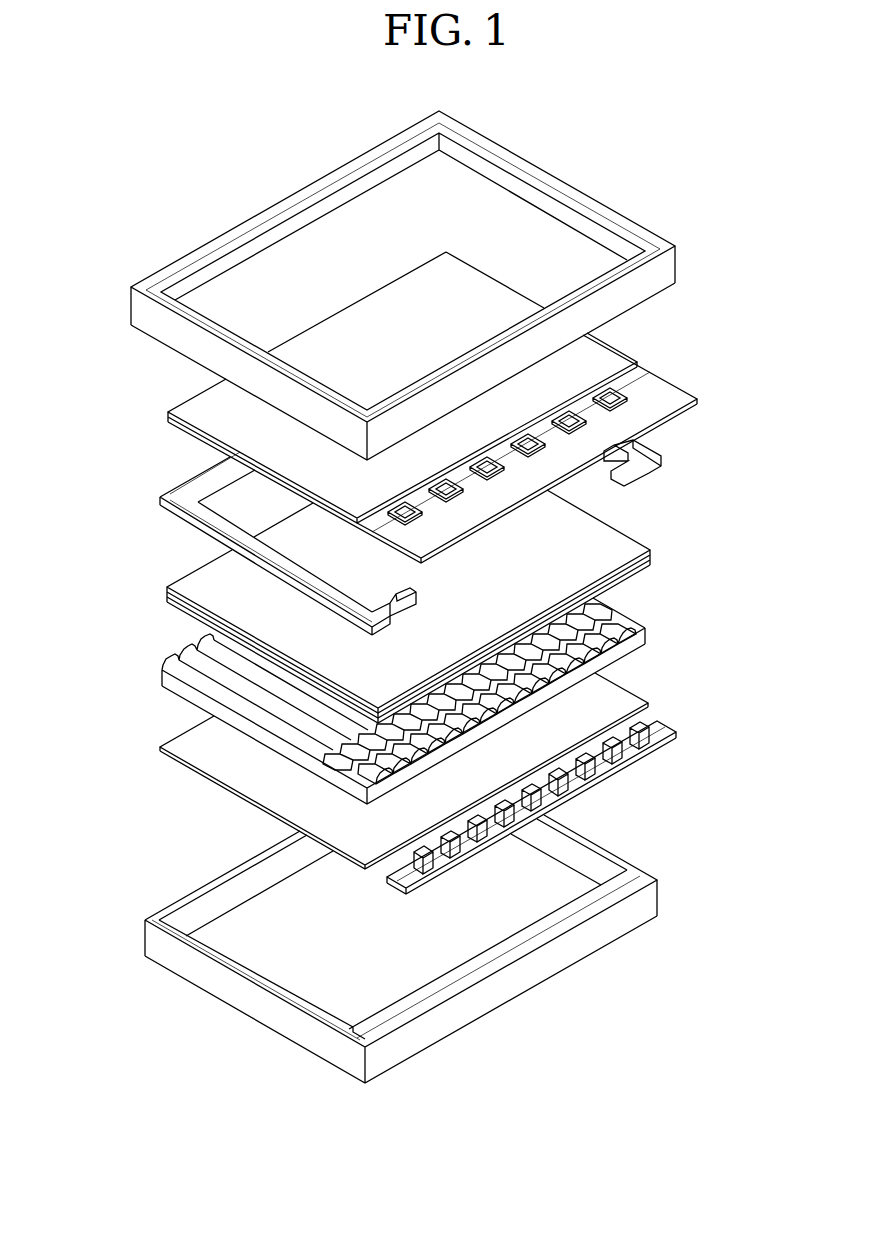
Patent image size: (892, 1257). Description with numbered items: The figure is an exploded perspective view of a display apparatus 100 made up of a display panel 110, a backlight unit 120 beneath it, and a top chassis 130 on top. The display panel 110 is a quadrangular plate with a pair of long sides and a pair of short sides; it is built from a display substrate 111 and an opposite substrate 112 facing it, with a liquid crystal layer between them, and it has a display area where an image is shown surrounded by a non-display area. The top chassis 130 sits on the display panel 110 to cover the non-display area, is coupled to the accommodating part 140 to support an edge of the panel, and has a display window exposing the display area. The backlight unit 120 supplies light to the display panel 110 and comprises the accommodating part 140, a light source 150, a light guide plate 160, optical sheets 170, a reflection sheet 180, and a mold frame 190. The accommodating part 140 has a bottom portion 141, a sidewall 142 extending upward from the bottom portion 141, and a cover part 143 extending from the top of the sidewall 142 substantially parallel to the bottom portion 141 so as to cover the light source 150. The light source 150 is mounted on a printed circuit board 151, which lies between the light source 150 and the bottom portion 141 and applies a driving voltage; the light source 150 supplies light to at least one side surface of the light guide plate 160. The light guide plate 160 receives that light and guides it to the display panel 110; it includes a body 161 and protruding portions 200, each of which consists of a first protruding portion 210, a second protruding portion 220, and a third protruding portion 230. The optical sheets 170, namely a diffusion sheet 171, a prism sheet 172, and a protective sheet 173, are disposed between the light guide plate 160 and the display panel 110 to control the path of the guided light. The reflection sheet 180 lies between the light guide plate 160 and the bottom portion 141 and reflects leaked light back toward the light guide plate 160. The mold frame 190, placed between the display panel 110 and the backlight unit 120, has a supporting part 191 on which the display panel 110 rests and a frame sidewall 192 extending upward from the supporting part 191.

The display apparatus 100 is at (652, 160).
The display panel 110 is at (454, 407).
The display substrate 111 is at (582, 400).
The opposite substrate 112 is at (590, 356).
The backlight unit 120 is at (446, 786).
The top chassis 130 is at (129, 314).
The accommodating part 140 is at (420, 949).
The bottom portion 141 is at (240, 932).
The sidewall 142 is at (650, 900).
The cover part 143 is at (622, 883).
The light source 150 is at (578, 807).
The printed circuit board 151 is at (648, 733).
The light guide plate 160 is at (429, 710).
The body 161 is at (648, 638).
The optical sheets 170 is at (469, 606).
The diffusion sheet 171 is at (651, 559).
The prism sheet 172 is at (651, 553).
The protective sheet 173 is at (651, 548).
The reflection sheet 180 is at (622, 697).
The mold frame 190 is at (250, 543).
The supporting part 191 is at (188, 501).
The frame sidewall 192 is at (195, 484).
The protruding portions 200 is at (502, 710).
The first protruding portion 210 is at (357, 773).
The second protruding portion 220 is at (333, 764).
The third protruding portion 230 is at (168, 663).